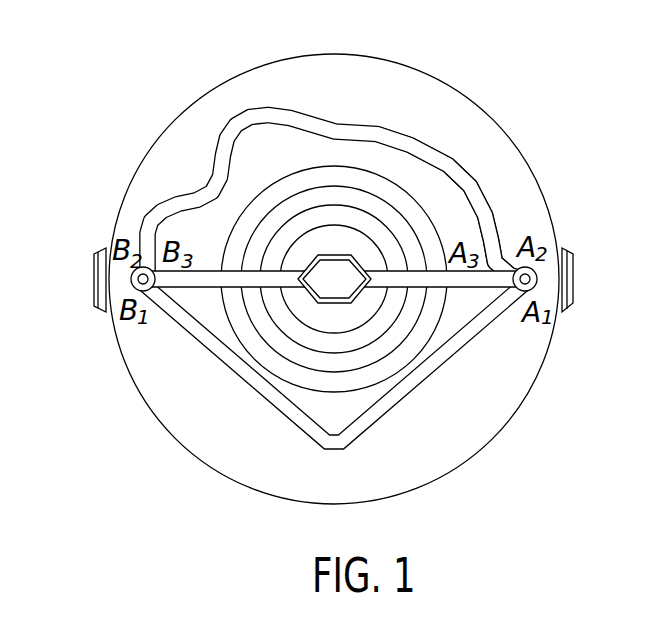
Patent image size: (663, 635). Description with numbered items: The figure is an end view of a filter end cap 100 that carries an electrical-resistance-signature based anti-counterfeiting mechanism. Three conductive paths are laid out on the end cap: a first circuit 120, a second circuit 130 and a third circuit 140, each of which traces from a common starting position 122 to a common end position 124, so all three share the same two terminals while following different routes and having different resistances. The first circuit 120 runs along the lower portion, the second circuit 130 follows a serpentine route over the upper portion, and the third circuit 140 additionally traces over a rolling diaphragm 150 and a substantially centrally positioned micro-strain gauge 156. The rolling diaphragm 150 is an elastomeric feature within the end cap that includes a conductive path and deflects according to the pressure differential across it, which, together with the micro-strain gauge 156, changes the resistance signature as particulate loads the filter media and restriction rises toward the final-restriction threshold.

The filter end cap 100 is at (471, 94).
The first circuit 120 is at (396, 408).
The common starting position 122 is at (537, 279).
The common end position 124 is at (131, 280).
The second circuit 130 is at (278, 120).
The third circuit 140 is at (452, 227).
The rolling diaphragm 150 is at (432, 341).
The micro-strain gauge 156 is at (328, 268).